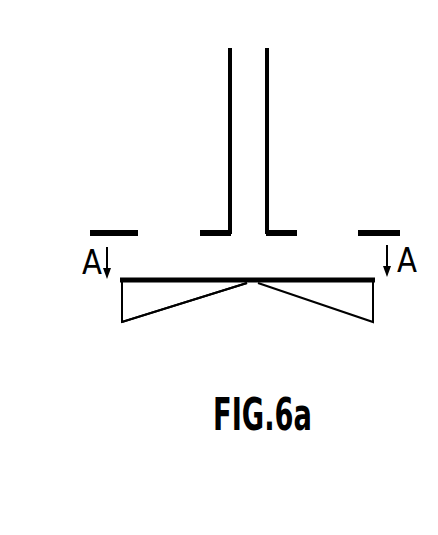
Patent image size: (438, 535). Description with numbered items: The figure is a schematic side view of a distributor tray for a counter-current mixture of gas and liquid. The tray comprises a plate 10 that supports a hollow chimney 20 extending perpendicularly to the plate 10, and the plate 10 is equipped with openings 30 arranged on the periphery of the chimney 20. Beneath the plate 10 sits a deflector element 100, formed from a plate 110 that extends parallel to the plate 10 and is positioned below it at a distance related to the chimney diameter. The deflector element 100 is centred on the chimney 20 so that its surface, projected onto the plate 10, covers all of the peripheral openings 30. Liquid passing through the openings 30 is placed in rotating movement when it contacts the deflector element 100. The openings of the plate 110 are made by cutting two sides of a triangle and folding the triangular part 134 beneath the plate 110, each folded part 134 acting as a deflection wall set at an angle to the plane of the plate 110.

The plate 10 is at (110, 230).
The hollow chimney 20 is at (268, 118).
The opening 30 is at (173, 230).
The deflector element 100 is at (122, 300).
The plate of the deflector element 110 is at (305, 278).
The folded triangular part 134 is at (154, 294).